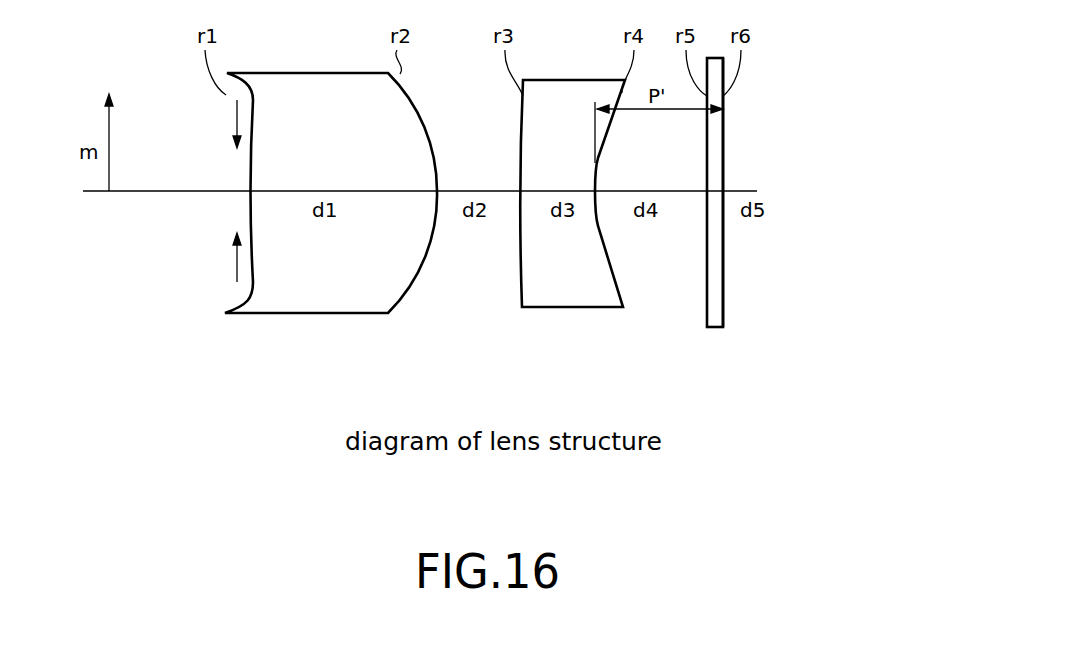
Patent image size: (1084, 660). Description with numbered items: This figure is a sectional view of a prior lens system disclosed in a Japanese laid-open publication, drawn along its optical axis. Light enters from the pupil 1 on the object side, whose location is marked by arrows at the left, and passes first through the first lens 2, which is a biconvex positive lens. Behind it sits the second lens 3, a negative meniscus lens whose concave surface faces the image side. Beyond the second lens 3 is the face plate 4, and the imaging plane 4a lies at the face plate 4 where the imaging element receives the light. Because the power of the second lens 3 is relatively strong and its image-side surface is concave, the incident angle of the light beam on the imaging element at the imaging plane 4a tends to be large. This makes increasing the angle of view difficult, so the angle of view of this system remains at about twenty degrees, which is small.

The pupil 1 is at (237, 110).
The first lens 2 is at (295, 314).
The second lens 3 is at (535, 309).
The face plate 4 is at (715, 328).
The imaging plane 4a is at (723, 247).